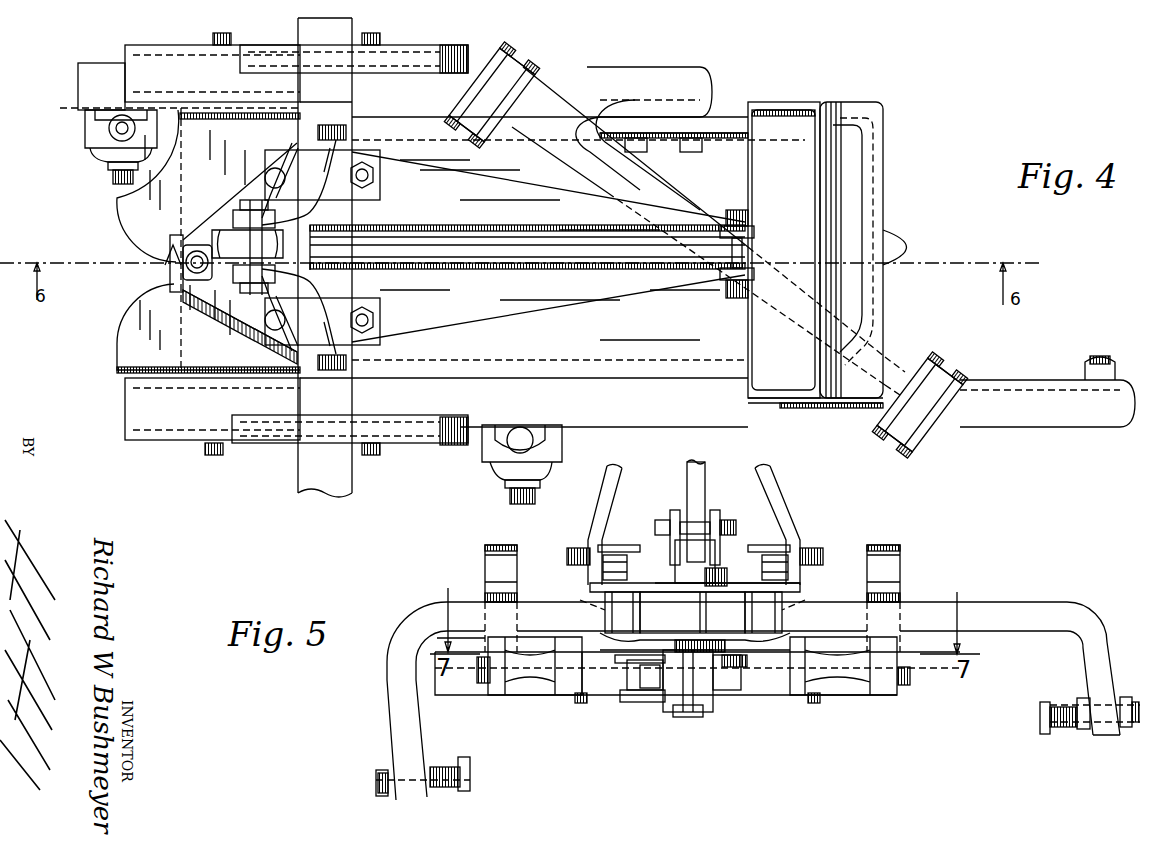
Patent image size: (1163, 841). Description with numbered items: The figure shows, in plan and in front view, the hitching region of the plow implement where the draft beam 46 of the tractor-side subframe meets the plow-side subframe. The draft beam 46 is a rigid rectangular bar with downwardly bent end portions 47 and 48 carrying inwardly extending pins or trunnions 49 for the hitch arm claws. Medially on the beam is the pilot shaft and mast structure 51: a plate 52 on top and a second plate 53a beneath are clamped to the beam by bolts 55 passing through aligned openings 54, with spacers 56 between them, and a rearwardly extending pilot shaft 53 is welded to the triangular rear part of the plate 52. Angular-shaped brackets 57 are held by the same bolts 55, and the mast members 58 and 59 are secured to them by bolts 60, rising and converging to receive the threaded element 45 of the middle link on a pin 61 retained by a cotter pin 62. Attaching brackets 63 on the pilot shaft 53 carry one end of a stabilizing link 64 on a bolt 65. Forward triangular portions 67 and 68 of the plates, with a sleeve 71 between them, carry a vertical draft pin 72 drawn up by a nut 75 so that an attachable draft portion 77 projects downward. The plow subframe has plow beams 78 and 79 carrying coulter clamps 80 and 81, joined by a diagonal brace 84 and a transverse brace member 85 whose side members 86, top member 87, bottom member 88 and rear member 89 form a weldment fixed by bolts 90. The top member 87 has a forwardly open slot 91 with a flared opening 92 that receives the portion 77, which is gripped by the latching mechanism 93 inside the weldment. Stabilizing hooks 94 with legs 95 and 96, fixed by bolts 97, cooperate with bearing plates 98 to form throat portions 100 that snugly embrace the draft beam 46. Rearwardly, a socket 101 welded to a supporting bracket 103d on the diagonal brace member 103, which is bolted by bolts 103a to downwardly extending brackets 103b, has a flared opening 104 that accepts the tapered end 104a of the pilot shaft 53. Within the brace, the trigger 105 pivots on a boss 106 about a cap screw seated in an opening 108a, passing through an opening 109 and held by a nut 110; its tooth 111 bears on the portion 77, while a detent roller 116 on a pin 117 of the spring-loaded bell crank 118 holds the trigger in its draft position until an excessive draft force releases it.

In FIG. 4, the threaded element 45 is at (247, 247).
In FIG. 4, the draft beam 46 is at (352, 460).
In FIG. 5, the draft beam 46 is at (757, 627).
In FIG. 5, the downwardly bent end portion 47 is at (384, 708).
In FIG. 5, the downwardly bent end portion 48 is at (1103, 682).
In FIG. 5, the pin or trunnion 49 is at (467, 763).
In FIG. 4, the pilot shaft and mast structure 51 is at (503, 337).
In FIG. 5, the pilot shaft and mast structure 51 is at (845, 527).
In FIG. 4, the plate 52 is at (575, 247).
In FIG. 5, the plate 52 is at (800, 590).
In FIG. 4, the pilot shaft 53 is at (540, 268).
In FIG. 5, the pilot shaft 53 is at (695, 561).
In FIG. 5, the second plate 53a is at (692, 612).
In FIG. 5, the aligned openings 54 is at (694, 607).
In FIG. 4, the bolts 55 is at (268, 180).
In FIG. 5, the bolts 55 is at (601, 570).
In FIG. 5, the spacers 56 is at (608, 626).
In FIG. 4, the angular-shaped brackets 57 is at (380, 152).
In FIG. 5, the angular-shaped brackets 57 is at (612, 542).
In FIG. 4, the mast member 58 is at (299, 182).
In FIG. 5, the mast member 58 is at (613, 490).
In FIG. 4, the mast member 59 is at (299, 311).
In FIG. 5, the mast member 59 is at (783, 494).
In FIG. 4, the bolts 60 is at (348, 130).
In FIG. 5, the bolts 60 is at (567, 555).
In FIG. 4, the pin 61 is at (266, 202).
In FIG. 4, the cotter pin 62 is at (274, 210).
In FIG. 4, the attaching brackets 63 is at (768, 226).
In FIG. 5, the attaching brackets 63 is at (675, 513).
In FIG. 4, the stabilizing link 64 is at (718, 268).
In FIG. 5, the stabilizing link 64 is at (701, 494).
In FIG. 4, the bolt 65 is at (733, 210).
In FIG. 5, the bolt 65 is at (733, 524).
In FIG. 4, the triangularly-shaped portion 67 is at (244, 198).
In FIG. 5, the triangularly-shaped portion 67 is at (668, 580).
In FIG. 5, the triangularly-shaped portion 68 is at (733, 650).
In FIG. 5, the sleeve 71 is at (713, 612).
In FIG. 4, the draft pin or latch element 72 is at (208, 268).
In FIG. 4, the nut 75 is at (183, 248).
In FIG. 5, the nut 75 is at (725, 568).
In FIG. 5, the attachable draft portion 77 is at (728, 686).
In FIG. 4, the plow beam 78 is at (604, 408).
In FIG. 5, the plow beam 78 is at (832, 693).
In FIG. 4, the plow beam 79 is at (652, 72).
In FIG. 5, the plow beam 79 is at (530, 692).
In FIG. 4, the clamp 80 is at (558, 446).
In FIG. 4, the clamp 81 is at (83, 128).
In FIG. 4, the diagonal brace 84 is at (958, 358).
In FIG. 4, the transverse brace member 85 is at (109, 340).
In FIG. 5, the transverse brace member 85 is at (802, 713).
In FIG. 4, the side members 86 is at (285, 118).
In FIG. 5, the side members 86 is at (580, 704).
In FIG. 4, the top member 87 is at (213, 253).
In FIG. 5, the top member 87 is at (578, 632).
In FIG. 5, the bottom member 88 is at (575, 700).
In FIG. 5, the rear member 89 is at (780, 723).
In FIG. 4, the bolts 90 is at (224, 33).
In FIG. 5, the bolts 90 is at (477, 680).
In FIG. 4, the guideway or slot 91 is at (178, 245).
In FIG. 4, the flared opening 92 is at (124, 281).
In FIG. 5, the latching mechanism 93 is at (733, 698).
In FIG. 4, the stabilizing hooks 94 is at (424, 41).
In FIG. 5, the stabilizing hooks 94 is at (512, 535).
In FIG. 4, the forwardly extending leg 95 is at (282, 45).
In FIG. 5, the forwardly extending leg 95 is at (485, 574).
In FIG. 4, the forwardly extending leg 96 is at (278, 446).
In FIG. 5, the forwardly extending leg 96 is at (903, 578).
In FIG. 4, the bolts 97 is at (465, 45).
In FIG. 4, the bearing plates 98 is at (206, 242).
In FIG. 5, the bearing plates 98 is at (488, 625).
In FIG. 5, the throat portion 100 is at (483, 590).
In FIG. 4, the socket 101 is at (888, 112).
In FIG. 4, the diagonal brace member 103 is at (643, 183).
In FIG. 4, the bolts 103a is at (961, 382).
In FIG. 4, the downwardly extending brackets 103b is at (940, 436).
In FIG. 4, the supporting bracket 103d is at (906, 332).
In FIG. 4, the flared opening 104 is at (784, 250).
In FIG. 4, the tapered end 104a is at (918, 246).
In FIG. 5, the trigger 105 is at (643, 710).
In FIG. 5, the boss 106 is at (718, 695).
In FIG. 5, the opening 108a is at (631, 659).
In FIG. 5, the opening 109 is at (675, 690).
In FIG. 5, the nut 110 is at (682, 716).
In FIG. 5, the gear like tooth 111 is at (738, 666).
In FIG. 5, the detent roller or cam follower 116 is at (627, 676).
In FIG. 5, the pin 117 is at (622, 700).
In FIG. 5, the bell crank 118 is at (640, 690).